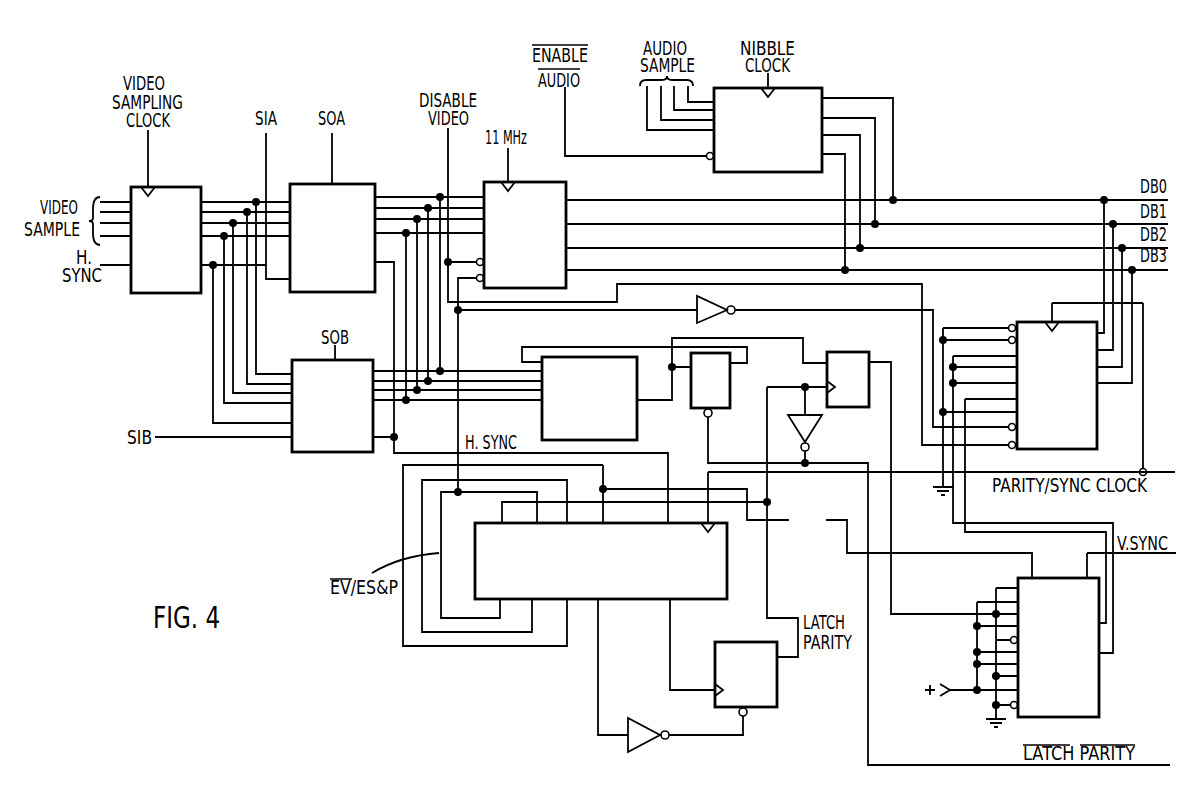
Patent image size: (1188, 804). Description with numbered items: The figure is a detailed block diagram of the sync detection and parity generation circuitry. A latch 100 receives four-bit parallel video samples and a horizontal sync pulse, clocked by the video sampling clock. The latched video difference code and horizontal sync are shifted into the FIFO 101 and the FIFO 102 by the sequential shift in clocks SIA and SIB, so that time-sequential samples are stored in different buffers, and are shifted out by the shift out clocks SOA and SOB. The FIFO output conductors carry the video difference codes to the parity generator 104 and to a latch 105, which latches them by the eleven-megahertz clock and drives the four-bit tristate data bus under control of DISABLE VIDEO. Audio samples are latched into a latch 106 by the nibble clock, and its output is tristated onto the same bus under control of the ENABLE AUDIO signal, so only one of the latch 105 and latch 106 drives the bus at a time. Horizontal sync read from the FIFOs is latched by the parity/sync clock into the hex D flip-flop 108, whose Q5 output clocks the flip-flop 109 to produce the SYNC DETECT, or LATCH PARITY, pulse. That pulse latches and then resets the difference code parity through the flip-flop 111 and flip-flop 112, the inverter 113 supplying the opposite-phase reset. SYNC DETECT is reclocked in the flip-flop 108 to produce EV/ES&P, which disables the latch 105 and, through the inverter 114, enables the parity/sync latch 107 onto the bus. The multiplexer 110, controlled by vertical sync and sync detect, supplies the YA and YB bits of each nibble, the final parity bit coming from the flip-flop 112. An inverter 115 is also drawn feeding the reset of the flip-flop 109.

The latch 100 is at (187, 186).
The FIFO 101 is at (348, 184).
The FIFO 102 is at (312, 455).
The parity generator 104 is at (542, 428).
The latch 105 is at (580, 175).
The latch 106 is at (813, 86).
The latch 107 is at (1040, 318).
The hex D flip-flop 108 is at (727, 577).
The flip-flop 109 is at (715, 656).
The multiplexer 110 is at (1099, 692).
The flip-flop 111 is at (733, 386).
The flip-flop 112 is at (845, 352).
The inverter 113 is at (819, 424).
The inverter 114 is at (697, 306).
The inverter 115 is at (662, 720).